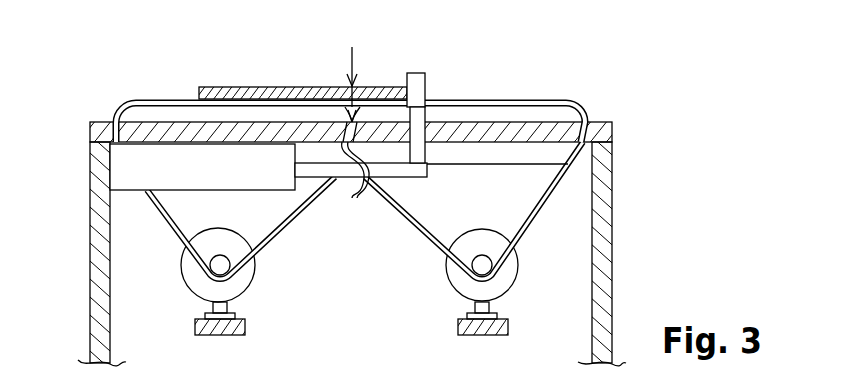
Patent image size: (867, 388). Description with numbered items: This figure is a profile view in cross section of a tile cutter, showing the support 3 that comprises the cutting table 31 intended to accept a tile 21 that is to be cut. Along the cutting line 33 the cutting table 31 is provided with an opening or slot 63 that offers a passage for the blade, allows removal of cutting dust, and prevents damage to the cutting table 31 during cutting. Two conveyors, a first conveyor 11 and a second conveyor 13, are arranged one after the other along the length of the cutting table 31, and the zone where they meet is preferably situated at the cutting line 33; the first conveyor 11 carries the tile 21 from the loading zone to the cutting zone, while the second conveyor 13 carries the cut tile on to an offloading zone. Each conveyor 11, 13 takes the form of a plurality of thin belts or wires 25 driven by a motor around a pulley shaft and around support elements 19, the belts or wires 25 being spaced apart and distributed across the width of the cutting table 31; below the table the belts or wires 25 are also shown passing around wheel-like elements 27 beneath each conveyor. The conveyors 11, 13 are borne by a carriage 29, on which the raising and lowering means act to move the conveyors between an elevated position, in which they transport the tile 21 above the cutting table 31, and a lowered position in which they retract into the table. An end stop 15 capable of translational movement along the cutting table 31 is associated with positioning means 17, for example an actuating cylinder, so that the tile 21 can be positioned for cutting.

The support 3 is at (659, 235).
The first conveyor 11 is at (111, 91).
The second conveyor 13 is at (500, 70).
The end stop 15 is at (417, 97).
The positioning means 17 is at (133, 166).
The support element 19 is at (164, 112).
The tile 21 is at (257, 93).
The drive belt or wire 25 is at (297, 207).
The pulley 27 is at (240, 278).
The carriage 29 is at (223, 330).
The cutting table 31 is at (601, 127).
The cutting line 33 is at (352, 50).
The opening or slot 63 is at (357, 193).